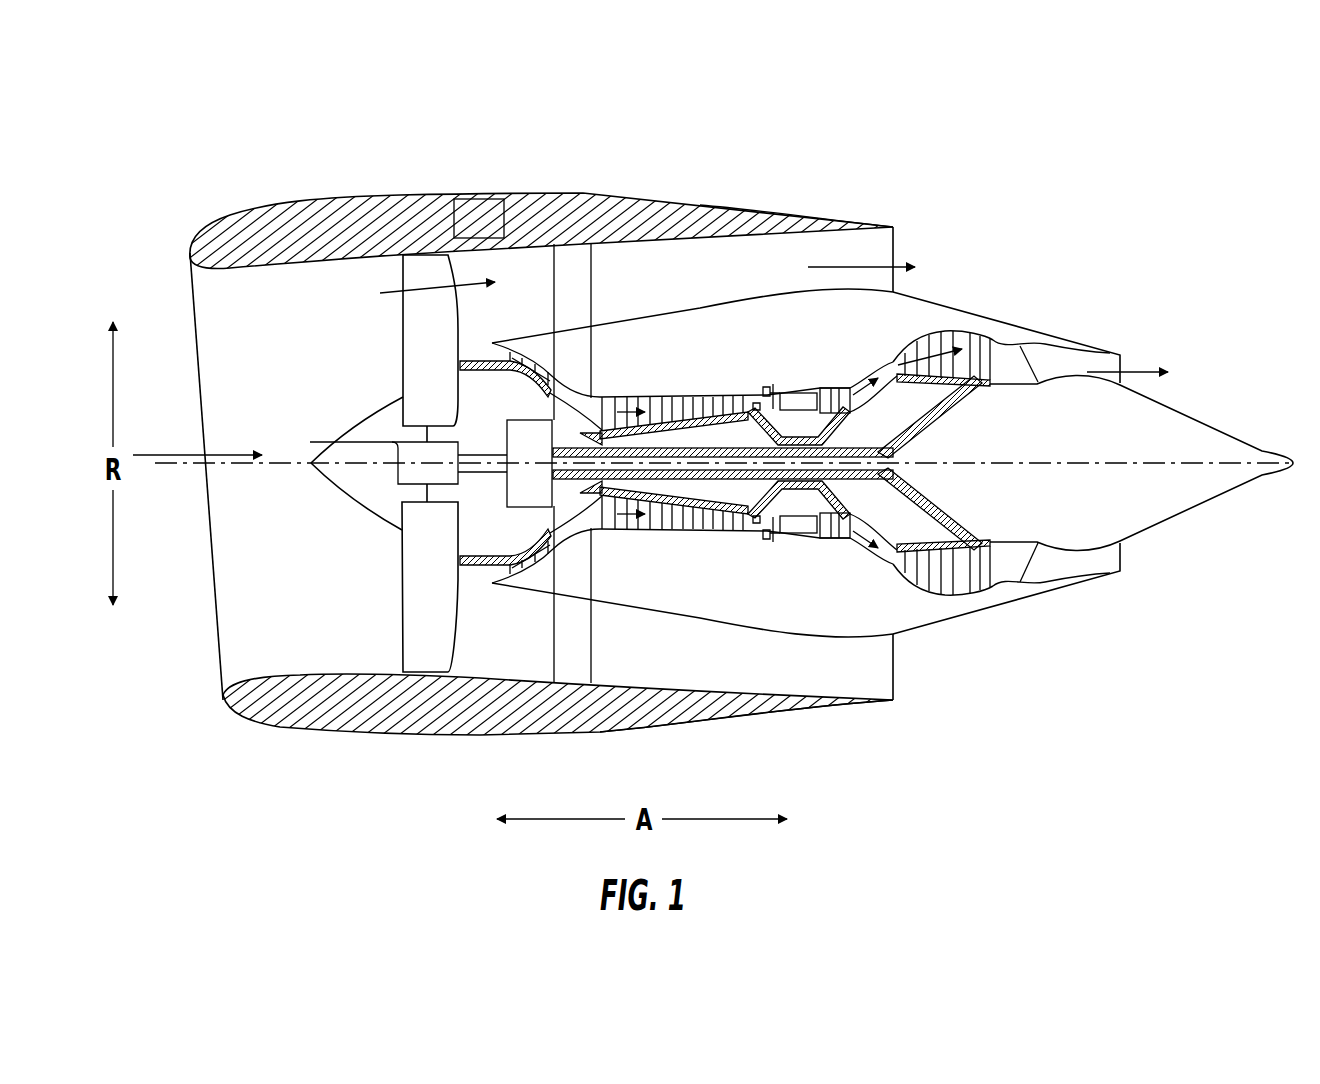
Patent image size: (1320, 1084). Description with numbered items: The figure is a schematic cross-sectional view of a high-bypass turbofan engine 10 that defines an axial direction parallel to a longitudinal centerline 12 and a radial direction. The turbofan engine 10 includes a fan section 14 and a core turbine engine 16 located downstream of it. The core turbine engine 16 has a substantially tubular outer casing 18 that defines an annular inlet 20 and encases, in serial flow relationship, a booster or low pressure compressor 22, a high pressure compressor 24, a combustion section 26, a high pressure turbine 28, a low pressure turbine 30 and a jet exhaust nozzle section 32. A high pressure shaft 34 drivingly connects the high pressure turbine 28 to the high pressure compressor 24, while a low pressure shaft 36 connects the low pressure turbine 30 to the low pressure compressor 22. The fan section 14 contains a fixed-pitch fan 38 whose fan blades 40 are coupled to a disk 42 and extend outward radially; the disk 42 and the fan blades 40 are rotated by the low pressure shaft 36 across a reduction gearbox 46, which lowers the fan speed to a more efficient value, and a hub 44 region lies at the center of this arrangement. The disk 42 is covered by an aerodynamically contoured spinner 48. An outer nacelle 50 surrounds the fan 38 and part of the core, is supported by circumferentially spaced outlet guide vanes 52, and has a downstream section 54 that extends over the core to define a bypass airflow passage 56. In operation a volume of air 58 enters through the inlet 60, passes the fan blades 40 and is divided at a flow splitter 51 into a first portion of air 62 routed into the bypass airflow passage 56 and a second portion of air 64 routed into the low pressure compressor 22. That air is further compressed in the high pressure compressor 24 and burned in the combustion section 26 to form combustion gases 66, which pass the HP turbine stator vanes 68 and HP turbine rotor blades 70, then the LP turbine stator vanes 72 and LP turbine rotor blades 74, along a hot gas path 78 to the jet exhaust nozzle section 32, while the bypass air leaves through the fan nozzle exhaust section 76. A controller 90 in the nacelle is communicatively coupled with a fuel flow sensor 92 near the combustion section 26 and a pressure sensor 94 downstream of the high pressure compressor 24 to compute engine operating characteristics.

The turbofan engine 10 is at (1036, 204).
The longitudinal centerline 12 is at (1057, 462).
The fan section 14 is at (395, 128).
The core turbine engine 16 is at (722, 372).
The outer casing 18 is at (750, 630).
The annular inlet 20 is at (497, 582).
The low pressure compressor 22 is at (560, 533).
The high pressure compressor 24 is at (633, 532).
The combustion section 26 is at (792, 533).
The high pressure turbine 28 is at (900, 531).
The low pressure turbine 30 is at (977, 603).
The jet exhaust nozzle section 32 is at (1043, 562).
The high pressure shaft 34 is at (798, 428).
The low pressure shaft 36 is at (926, 429).
The fan 38 is at (345, 503).
The fan blades 40 is at (397, 612).
The disk 42 is at (420, 414).
The actuation member 44 is at (310, 442).
The reduction gearbox 46 is at (523, 460).
The spinner 48 is at (320, 478).
The outer nacelle 50 is at (452, 737).
The flow splitter 51 is at (497, 578).
The outlet guide vanes 52 is at (593, 271).
The downstream section of the nacelle 54 is at (838, 218).
The bypass airflow passage 56 is at (741, 283).
The volume of air 58 is at (193, 454).
The inlet 60 is at (220, 676).
The first portion of air 62 is at (417, 298).
The second portion of air 64 is at (484, 356).
The combustion gases 66 is at (837, 387).
The HP turbine stator vanes 68 is at (810, 534).
The HP turbine rotor blades 70 is at (840, 508).
The LP turbine stator vanes 72 is at (900, 580).
The LP turbine rotor blades 74 is at (913, 584).
The fan nozzle exhaust section 76 is at (884, 250).
The hot gas path 78 is at (880, 370).
The controller 90 is at (490, 197).
The fuel flow sensor 92 is at (767, 388).
The pressure sensor 94 is at (740, 388).